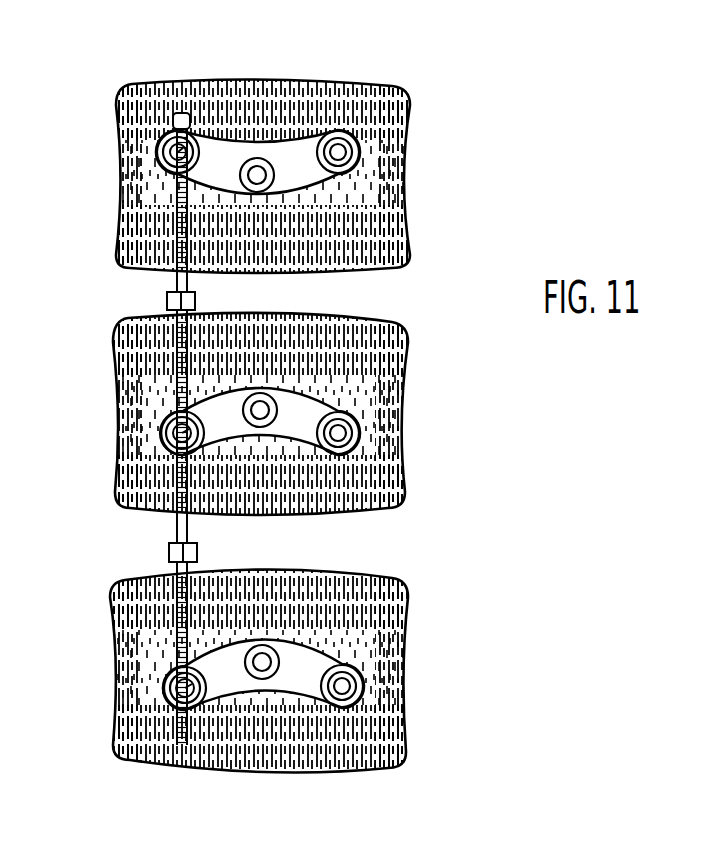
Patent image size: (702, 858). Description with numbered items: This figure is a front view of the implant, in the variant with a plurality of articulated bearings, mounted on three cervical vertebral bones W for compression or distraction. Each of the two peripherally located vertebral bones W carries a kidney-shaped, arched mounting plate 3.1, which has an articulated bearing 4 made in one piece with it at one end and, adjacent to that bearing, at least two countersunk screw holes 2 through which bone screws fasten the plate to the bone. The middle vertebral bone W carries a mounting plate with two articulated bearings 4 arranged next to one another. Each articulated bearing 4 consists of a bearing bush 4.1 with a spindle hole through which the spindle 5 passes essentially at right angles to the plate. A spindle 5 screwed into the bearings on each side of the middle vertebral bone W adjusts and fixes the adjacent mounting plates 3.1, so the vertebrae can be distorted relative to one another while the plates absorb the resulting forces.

The screw holes 2 is at (323, 135).
The vertebral bones W is at (400, 137).
The mounting plate 3.1 is at (322, 176).
The articulated bearing 4 is at (163, 143).
The bearing bush 4.1 is at (163, 160).
The spindle 5 is at (163, 300).